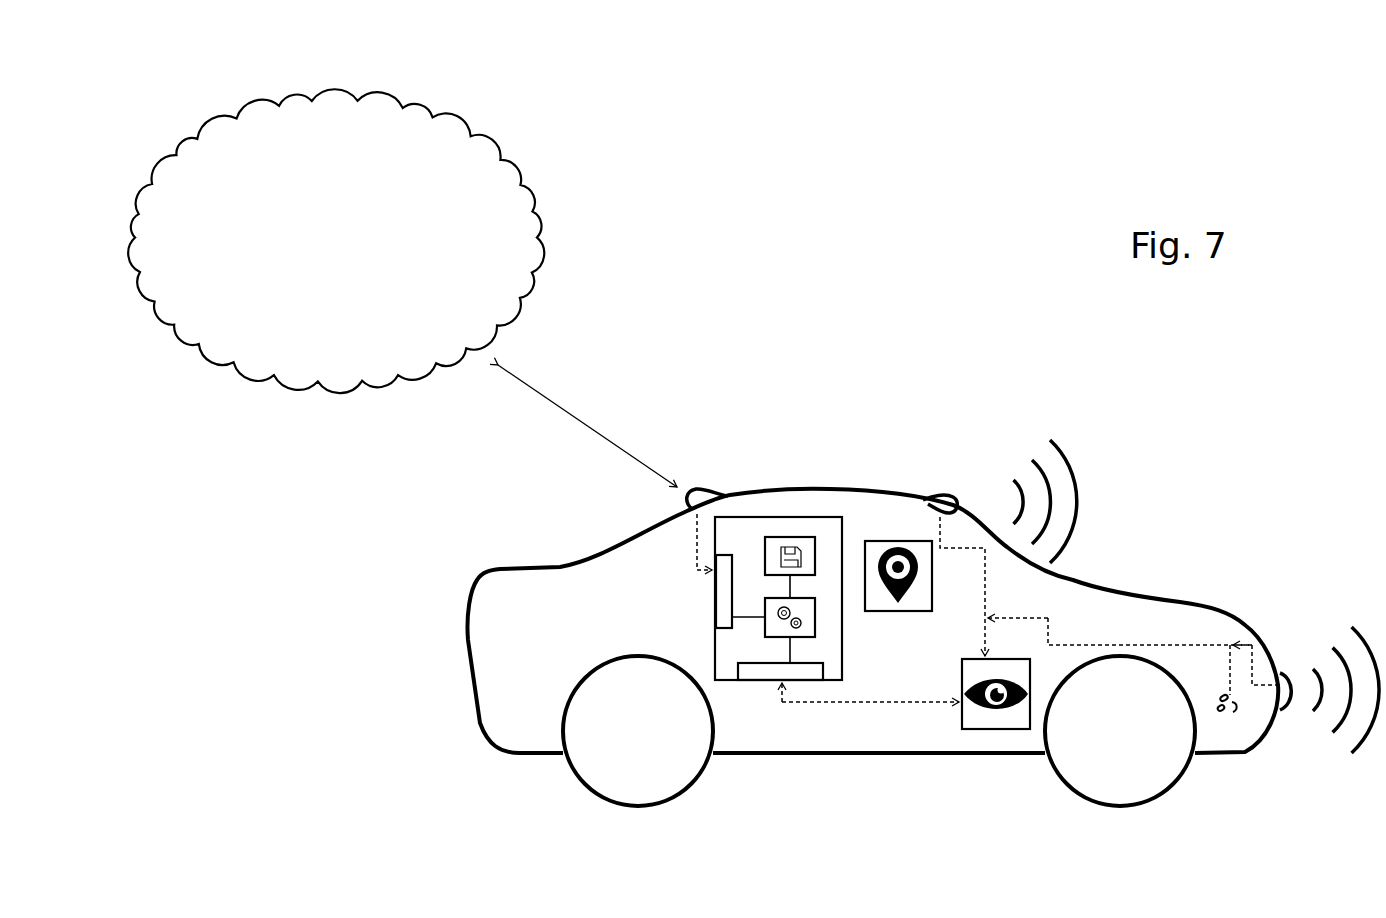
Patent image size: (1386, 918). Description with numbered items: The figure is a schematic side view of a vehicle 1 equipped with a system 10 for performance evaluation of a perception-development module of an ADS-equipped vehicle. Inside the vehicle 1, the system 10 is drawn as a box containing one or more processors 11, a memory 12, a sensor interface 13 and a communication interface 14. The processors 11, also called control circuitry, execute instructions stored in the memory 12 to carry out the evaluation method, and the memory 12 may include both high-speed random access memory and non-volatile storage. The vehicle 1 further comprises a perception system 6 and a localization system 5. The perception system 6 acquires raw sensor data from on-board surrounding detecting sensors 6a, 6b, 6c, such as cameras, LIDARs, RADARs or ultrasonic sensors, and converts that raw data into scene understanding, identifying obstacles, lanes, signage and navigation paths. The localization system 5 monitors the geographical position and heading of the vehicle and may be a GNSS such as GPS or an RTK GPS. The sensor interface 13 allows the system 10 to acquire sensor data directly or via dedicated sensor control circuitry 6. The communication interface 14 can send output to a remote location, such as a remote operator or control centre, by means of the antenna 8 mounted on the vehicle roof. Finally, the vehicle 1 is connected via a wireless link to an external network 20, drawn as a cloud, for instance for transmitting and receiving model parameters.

The vehicle 1 is at (489, 749).
The localization system 5 is at (880, 540).
The perception system 6 is at (1010, 731).
The surrounding detecting sensor 6a is at (1232, 712).
The surrounding detecting sensor 6b is at (1285, 677).
The surrounding detecting sensor 6c is at (943, 500).
The antenna 8 is at (704, 490).
The system 10 is at (770, 516).
The processor 11 is at (815, 620).
The memory 12 is at (792, 537).
The sensor interface 13 is at (765, 678).
The communication interface 14 is at (720, 605).
The external network 20 is at (483, 124).